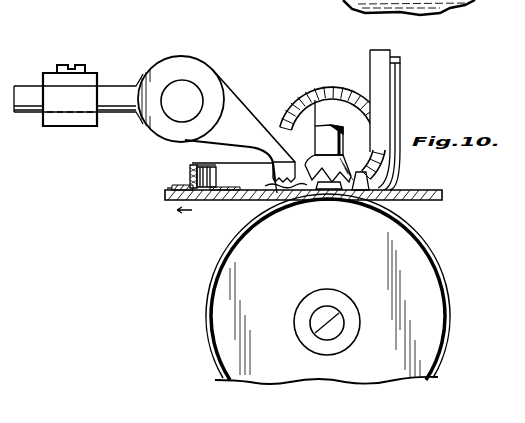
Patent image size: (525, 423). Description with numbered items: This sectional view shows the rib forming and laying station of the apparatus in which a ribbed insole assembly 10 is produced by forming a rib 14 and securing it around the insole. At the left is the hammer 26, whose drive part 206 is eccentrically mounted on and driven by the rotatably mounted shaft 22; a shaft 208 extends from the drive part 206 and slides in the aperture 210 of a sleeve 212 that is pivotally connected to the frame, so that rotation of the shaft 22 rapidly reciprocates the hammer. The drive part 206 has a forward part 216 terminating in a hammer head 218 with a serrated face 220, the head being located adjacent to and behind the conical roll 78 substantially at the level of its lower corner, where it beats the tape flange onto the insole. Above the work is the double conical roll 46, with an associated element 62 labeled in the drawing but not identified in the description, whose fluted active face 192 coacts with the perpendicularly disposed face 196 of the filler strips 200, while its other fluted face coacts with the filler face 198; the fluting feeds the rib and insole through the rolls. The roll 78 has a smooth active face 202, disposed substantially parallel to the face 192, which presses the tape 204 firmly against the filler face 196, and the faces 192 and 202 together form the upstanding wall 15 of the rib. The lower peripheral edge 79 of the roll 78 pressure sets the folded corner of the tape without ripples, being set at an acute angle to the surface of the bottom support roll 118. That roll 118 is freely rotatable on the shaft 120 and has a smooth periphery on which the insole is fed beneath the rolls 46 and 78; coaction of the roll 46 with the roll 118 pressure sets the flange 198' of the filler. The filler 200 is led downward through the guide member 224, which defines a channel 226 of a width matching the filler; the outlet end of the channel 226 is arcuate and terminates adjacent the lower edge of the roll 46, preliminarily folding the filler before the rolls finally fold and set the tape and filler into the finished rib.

The ribbed insole assembly 10 is at (413, 209).
The rib 14 is at (209, 190).
The upstanding wall 15 is at (197, 160).
The shaft 22 is at (172, 108).
The hammer 26 is at (181, 54).
The double conical roll 46 is at (327, 88).
The pin 62 is at (313, 92).
The conical roll 78 is at (338, 165).
The lower peripheral edge 79 is at (351, 190).
The bottom support roll 118 is at (208, 288).
The shaft 120 is at (345, 308).
The active face 192 is at (348, 92).
The face 196 is at (191, 168).
The face 198 is at (194, 175).
The flange 198' is at (158, 217).
The filler strip 200 is at (167, 188).
The active face 202 is at (306, 157).
The tape 204 is at (212, 187).
The drive part 206 is at (197, 72).
The shaft 208 is at (24, 90).
The aperture 210 is at (80, 113).
The sleeve 212 is at (49, 123).
The forward part 216 is at (235, 102).
The hammer head 218 is at (277, 138).
The serrated face 220 is at (273, 193).
The guide member 224 is at (380, 62).
The channel 226 is at (396, 63).